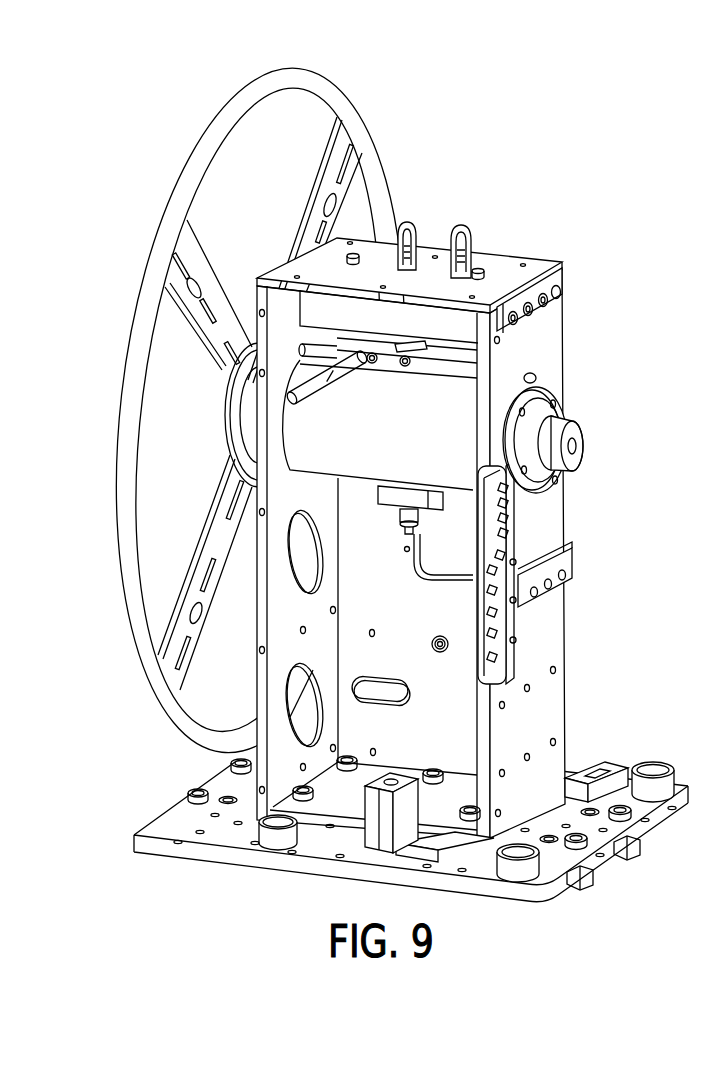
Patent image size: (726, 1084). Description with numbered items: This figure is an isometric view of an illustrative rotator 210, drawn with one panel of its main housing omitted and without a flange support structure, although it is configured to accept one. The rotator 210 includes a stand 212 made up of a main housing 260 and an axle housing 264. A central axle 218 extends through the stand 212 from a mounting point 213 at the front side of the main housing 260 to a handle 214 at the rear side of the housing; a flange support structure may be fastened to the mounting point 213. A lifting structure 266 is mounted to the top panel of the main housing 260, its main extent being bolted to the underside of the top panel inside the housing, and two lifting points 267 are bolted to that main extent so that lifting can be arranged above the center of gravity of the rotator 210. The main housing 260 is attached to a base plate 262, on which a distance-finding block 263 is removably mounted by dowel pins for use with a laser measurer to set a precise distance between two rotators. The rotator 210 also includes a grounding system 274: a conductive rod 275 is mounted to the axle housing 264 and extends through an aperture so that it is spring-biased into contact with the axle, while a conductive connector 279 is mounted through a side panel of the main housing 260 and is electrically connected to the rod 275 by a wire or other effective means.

The rotator 210 is at (403, 477).
The stand 212 is at (562, 318).
The mounting point 213 is at (605, 405).
The handle 214 is at (221, 128).
The central axle 218 is at (574, 460).
The main housing 260 is at (562, 340).
The base plate 262 is at (648, 810).
The distance-finding block 263 is at (405, 788).
The axle housing 264 is at (347, 481).
The lifting structure 266 is at (472, 212).
The lifting points 267 is at (402, 217).
The grounding system 274 is at (604, 539).
The conductive rod 275 is at (406, 556).
The conductive connector 279 is at (429, 646).